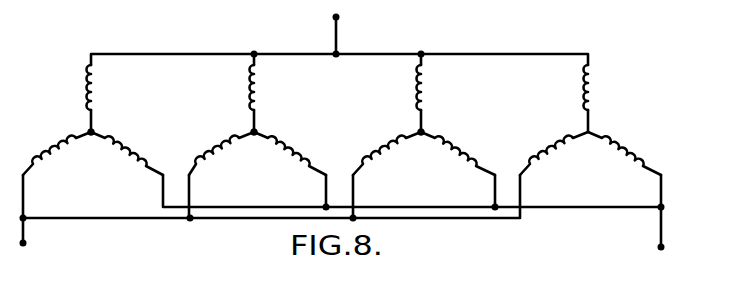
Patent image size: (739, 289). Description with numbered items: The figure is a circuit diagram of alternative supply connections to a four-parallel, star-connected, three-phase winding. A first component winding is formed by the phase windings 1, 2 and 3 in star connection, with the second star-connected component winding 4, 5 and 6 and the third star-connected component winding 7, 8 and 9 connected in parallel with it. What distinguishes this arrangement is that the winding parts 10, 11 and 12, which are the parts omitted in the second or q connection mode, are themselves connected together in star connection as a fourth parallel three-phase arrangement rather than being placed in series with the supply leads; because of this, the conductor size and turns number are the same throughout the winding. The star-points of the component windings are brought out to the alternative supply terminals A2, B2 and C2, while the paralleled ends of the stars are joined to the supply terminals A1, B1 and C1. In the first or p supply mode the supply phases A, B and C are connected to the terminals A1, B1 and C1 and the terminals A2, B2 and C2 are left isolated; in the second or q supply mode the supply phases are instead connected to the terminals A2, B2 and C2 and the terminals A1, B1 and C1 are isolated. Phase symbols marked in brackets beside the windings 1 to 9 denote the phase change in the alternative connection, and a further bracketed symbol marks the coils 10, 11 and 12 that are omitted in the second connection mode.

The phase winding 1 is at (85, 87).
The phase winding 2 is at (127, 157).
The phase winding 3 is at (57, 153).
The phase winding 4 is at (245, 87).
The phase winding 5 is at (290, 157).
The phase winding 6 is at (221, 154).
The phase winding 7 is at (419, 87).
The phase winding 8 is at (459, 157).
The phase winding 9 is at (387, 155).
The winding part 10 is at (586, 87).
The winding part 11 is at (624, 157).
The winding part 12 is at (554, 157).
The supply terminal A1 is at (347, 16).
The alternative supply terminal A2 is at (91, 132).
The supply terminal B1 is at (643, 247).
The alternative supply terminal B2 is at (254, 132).
The supply terminal C1 is at (38, 245).
The alternative supply terminal C2 is at (421, 132).